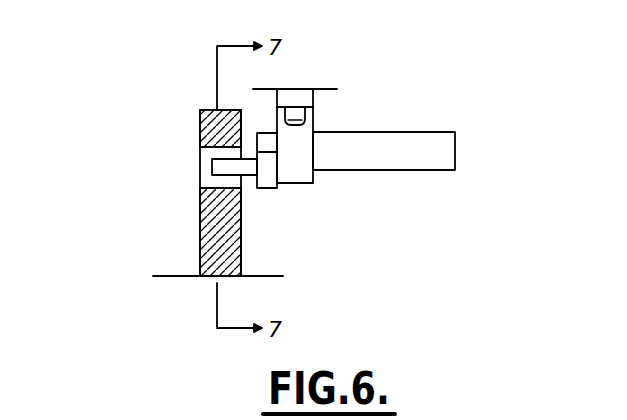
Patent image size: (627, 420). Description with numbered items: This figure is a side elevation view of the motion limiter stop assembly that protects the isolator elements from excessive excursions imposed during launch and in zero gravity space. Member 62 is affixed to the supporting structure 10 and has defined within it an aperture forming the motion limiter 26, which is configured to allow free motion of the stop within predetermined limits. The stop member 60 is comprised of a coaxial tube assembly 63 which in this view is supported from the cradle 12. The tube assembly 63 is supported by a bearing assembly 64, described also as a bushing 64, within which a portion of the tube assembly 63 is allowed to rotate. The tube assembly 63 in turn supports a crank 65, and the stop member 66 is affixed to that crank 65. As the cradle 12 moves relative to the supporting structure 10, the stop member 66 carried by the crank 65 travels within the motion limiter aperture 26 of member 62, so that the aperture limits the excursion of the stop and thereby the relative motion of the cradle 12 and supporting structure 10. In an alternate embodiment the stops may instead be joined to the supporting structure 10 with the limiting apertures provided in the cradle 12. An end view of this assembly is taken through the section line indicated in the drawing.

The supporting structure 10 is at (161, 276).
The cradle 12 is at (314, 106).
The motion limiting aperture 26 is at (200, 153).
The stop member 60 is at (207, 164).
The member 62 is at (199, 122).
The coaxial tube assembly 63 is at (472, 148).
The bearing assembly 64 is at (316, 176).
The crank 65 is at (278, 189).
The stop member 66 is at (248, 177).